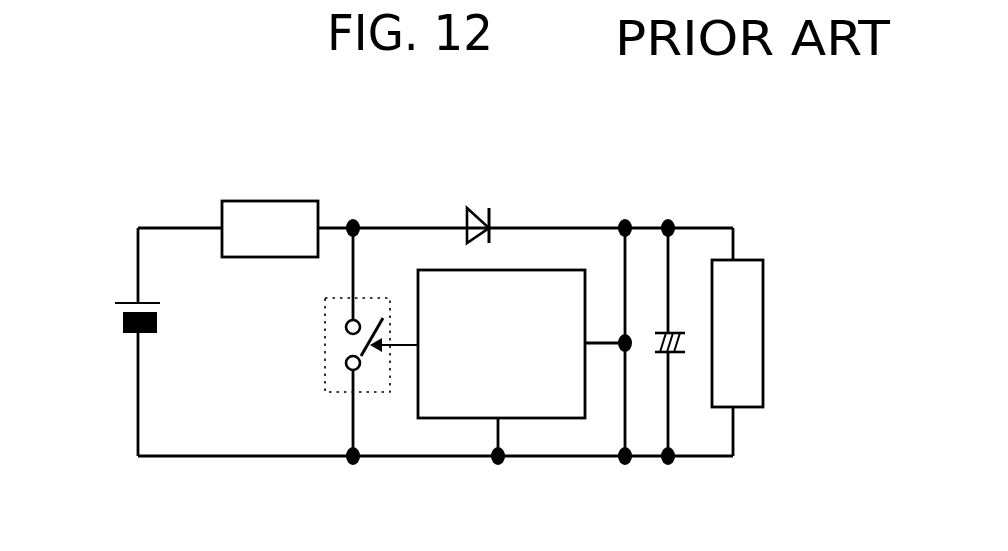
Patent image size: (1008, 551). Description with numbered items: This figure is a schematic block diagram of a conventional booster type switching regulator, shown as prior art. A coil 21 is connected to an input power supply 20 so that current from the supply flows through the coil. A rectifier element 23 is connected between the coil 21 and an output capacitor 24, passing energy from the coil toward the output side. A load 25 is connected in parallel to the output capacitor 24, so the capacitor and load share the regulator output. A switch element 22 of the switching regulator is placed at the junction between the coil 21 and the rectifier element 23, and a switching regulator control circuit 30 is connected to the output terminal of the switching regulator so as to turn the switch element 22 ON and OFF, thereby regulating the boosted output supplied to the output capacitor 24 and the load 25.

The input power supply 20 is at (115, 322).
The coil 21 is at (258, 193).
The switch element 22 is at (315, 348).
The rectifier element 23 is at (467, 200).
The output capacitor 24 is at (677, 315).
The load 25 is at (755, 248).
The switching regulator control circuit 30 is at (478, 428).